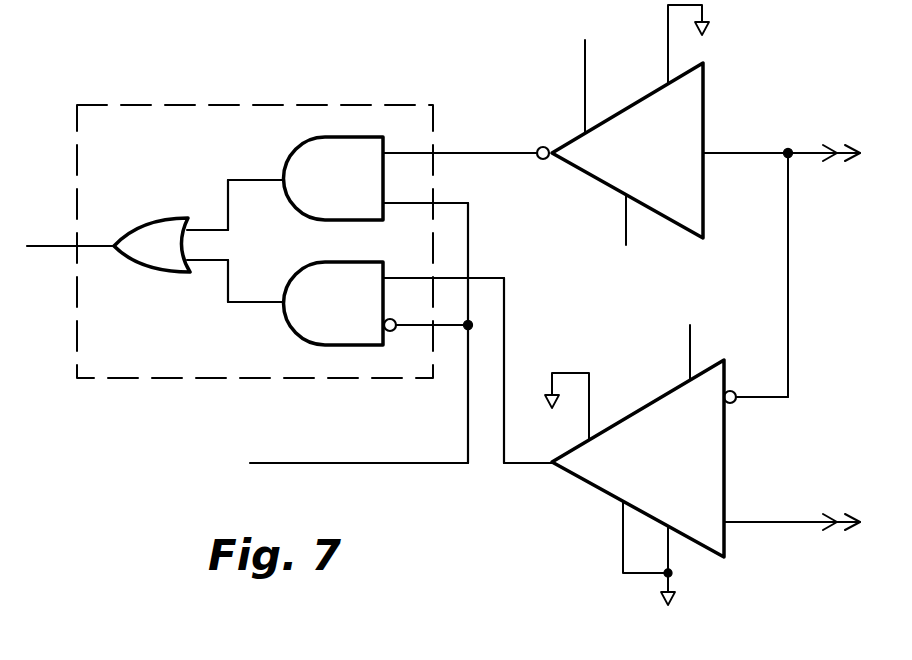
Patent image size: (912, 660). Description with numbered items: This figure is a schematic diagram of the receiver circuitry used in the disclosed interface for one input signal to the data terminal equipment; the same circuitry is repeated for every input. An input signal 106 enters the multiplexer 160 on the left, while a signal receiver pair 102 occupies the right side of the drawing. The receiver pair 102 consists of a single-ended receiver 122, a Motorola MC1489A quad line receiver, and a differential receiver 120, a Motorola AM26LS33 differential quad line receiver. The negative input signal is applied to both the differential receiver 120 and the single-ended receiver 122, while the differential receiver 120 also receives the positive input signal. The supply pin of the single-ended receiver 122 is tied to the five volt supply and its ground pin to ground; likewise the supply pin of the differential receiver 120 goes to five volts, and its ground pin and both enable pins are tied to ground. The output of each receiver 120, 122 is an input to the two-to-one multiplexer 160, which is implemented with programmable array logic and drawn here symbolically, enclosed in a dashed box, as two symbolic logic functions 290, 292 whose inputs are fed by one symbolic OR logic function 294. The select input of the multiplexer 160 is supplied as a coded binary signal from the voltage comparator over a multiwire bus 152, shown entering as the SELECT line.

The signal receiver pair 102 is at (787, 50).
The input signal line 106 is at (47, 246).
The differential receiver 120 is at (726, 478).
The single-ended receiver 122 is at (703, 97).
The multiwire bus 152 is at (362, 464).
The multiplexer 160 is at (170, 105).
The symbolic logic function 290 is at (290, 156).
The symbolic logic function 292 is at (285, 330).
The symbolic OR logic function 294 is at (170, 216).